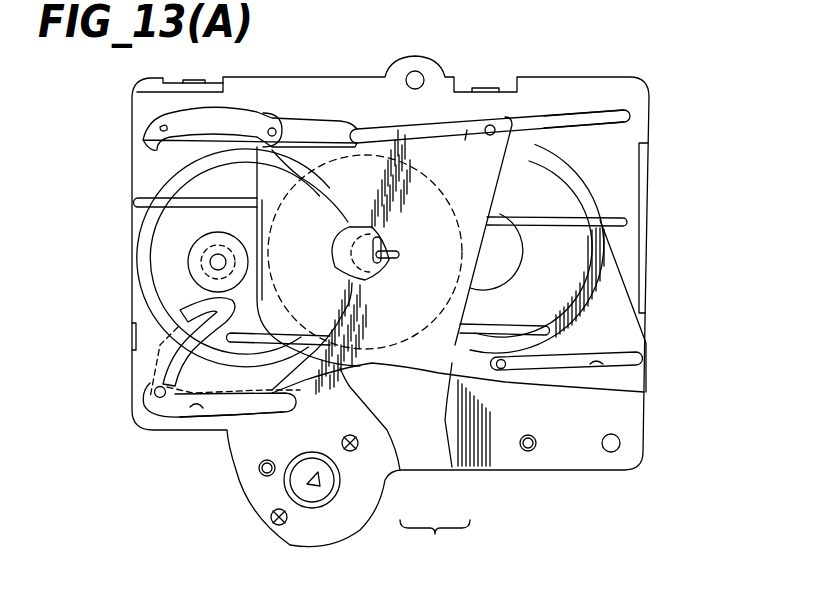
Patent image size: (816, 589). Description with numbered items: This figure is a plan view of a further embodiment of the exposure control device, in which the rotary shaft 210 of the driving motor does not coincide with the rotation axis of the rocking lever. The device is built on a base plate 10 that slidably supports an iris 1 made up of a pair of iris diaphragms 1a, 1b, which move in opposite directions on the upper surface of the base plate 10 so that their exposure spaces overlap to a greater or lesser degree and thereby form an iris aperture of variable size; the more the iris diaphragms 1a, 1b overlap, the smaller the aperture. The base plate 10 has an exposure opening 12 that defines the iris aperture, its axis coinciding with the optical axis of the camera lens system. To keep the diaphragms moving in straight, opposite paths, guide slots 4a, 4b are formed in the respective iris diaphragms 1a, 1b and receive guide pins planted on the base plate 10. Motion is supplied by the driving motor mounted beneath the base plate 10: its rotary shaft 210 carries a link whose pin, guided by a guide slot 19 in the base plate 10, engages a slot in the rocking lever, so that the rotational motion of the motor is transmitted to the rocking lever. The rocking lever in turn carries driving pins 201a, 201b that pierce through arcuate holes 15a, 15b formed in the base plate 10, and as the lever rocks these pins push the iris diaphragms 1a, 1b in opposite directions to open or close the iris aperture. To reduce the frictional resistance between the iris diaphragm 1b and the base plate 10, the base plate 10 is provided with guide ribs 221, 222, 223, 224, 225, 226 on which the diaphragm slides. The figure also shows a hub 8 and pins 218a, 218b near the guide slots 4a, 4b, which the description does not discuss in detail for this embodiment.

The iris 1 is at (451, 334).
The iris diaphragm 1a is at (400, 470).
The iris diaphragm 1b is at (452, 467).
The guide slot 4a is at (419, 134).
The guide slot 4b is at (607, 368).
The hub 8 is at (340, 257).
The base plate 10 is at (153, 173).
The exposure opening 12 is at (414, 171).
The arcuate hole 15a is at (150, 133).
The arcuate hole 15b is at (197, 405).
The guide slot 19 is at (197, 313).
The driving pin 201a is at (282, 130).
The driving pin 201b is at (148, 397).
The rotary shaft 210 is at (316, 484).
The pin 218a is at (492, 126).
The pin 218b is at (502, 370).
The guide rib 221 is at (493, 323).
The guide rib 222 is at (626, 223).
The guide rib 223 is at (132, 206).
The guide rib 224 is at (247, 341).
The guide rib 225 is at (240, 417).
The guide rib 226 is at (597, 111).